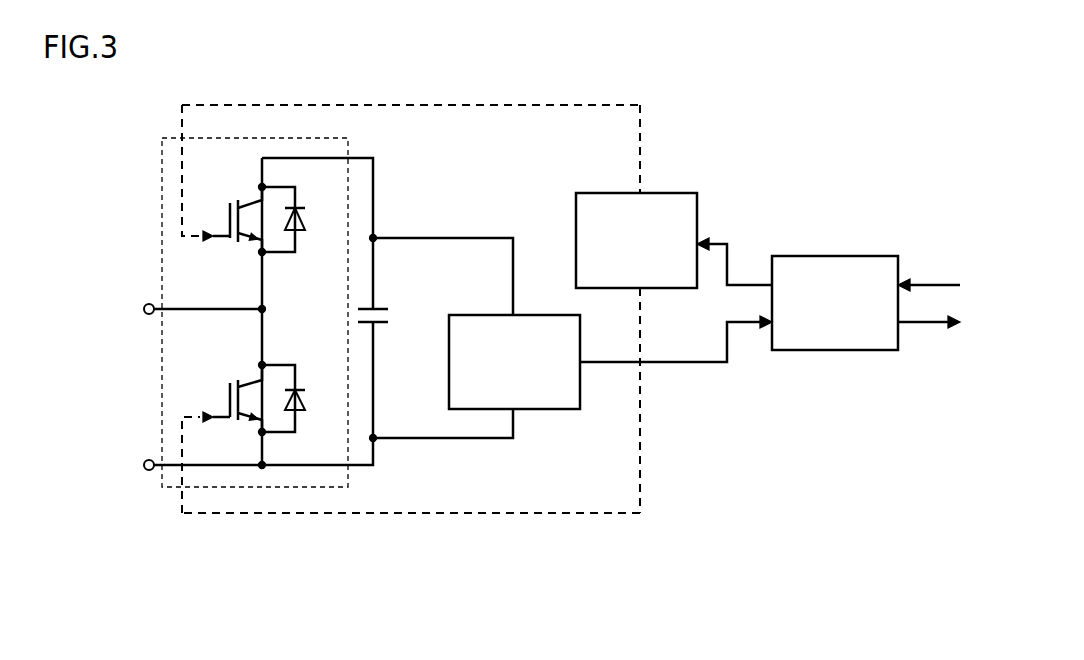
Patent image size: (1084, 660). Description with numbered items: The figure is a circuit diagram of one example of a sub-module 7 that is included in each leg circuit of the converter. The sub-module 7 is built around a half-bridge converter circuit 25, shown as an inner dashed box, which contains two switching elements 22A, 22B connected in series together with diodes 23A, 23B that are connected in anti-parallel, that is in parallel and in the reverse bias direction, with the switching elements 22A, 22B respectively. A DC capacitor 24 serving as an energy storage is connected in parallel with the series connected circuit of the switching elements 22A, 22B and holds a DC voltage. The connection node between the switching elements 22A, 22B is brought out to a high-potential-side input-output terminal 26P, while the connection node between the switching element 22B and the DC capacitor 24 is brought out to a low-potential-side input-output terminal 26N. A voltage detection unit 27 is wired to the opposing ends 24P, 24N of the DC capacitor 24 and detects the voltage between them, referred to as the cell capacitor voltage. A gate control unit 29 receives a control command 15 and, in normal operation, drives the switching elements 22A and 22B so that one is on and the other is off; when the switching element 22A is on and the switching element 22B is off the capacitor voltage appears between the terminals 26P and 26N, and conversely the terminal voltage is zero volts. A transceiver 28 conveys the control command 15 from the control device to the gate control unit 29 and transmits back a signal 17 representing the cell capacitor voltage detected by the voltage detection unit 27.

The sub-module 7 is at (100, 107).
The half-bridge converter circuit 25 is at (285, 137).
The switching element 22A is at (237, 259).
The switching element 22B is at (237, 378).
The diode 23A is at (322, 206).
The diode 23B is at (322, 386).
The DC capacitor 24 is at (380, 309).
The end of DC capacitor 24P is at (375, 260).
The end of DC capacitor 24N is at (375, 350).
The high-potential-side input-output terminal 26P is at (127, 309).
The low-potential-side input-output terminal 26N is at (127, 465).
The voltage detection unit 27 is at (560, 411).
The gate control unit 29 is at (662, 193).
The transceiver 28 is at (850, 256).
The control command 15 is at (930, 284).
The signal 17 is at (932, 330).